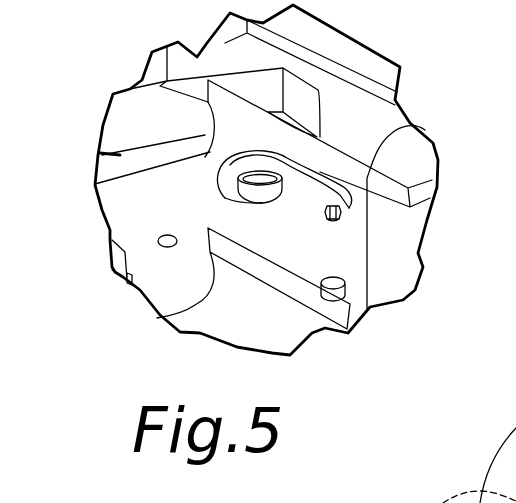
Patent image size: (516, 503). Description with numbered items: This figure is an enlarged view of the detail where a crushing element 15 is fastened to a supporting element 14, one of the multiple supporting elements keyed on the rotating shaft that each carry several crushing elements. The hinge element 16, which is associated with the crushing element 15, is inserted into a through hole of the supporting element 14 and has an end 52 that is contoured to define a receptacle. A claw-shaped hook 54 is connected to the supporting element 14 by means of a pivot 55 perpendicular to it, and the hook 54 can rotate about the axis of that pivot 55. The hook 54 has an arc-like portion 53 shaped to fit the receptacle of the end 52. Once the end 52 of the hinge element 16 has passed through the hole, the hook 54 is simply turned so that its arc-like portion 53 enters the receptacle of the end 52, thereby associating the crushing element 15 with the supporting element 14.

The supporting element 14 is at (367, 182).
The crushing element 15 is at (150, 135).
The hinge element 16 is at (256, 192).
The end 52 is at (267, 195).
The arc-like portion 53 is at (237, 168).
The claw-shaped hook 54 is at (326, 181).
The pivot 55 is at (338, 225).